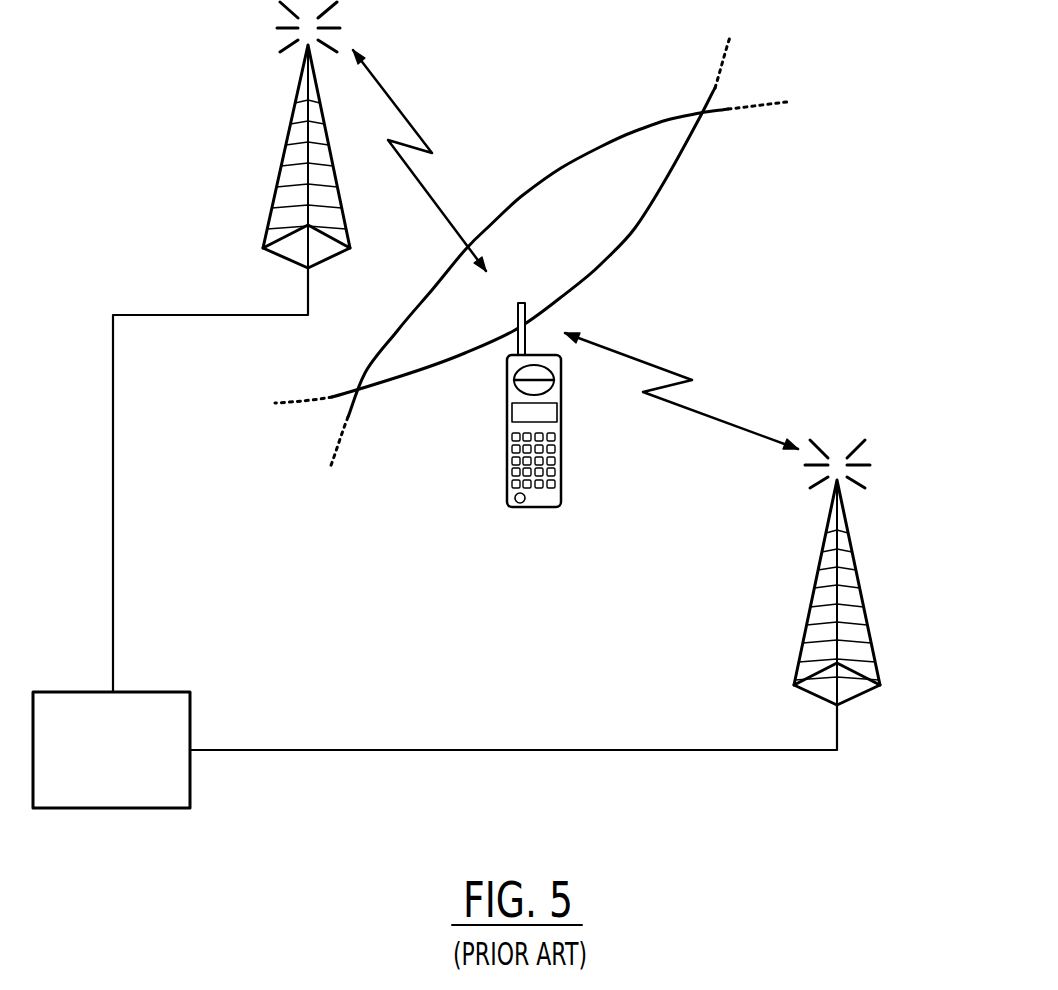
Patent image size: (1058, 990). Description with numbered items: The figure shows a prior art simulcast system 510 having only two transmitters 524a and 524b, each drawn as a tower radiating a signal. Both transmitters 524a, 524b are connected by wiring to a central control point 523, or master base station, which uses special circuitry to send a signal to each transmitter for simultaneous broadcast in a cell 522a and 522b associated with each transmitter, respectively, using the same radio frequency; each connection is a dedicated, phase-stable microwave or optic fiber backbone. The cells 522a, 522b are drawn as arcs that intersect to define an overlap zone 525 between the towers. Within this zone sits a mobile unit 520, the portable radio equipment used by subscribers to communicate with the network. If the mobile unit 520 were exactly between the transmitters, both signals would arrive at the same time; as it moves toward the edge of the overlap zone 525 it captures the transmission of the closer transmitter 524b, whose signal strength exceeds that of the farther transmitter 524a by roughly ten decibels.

The simulcast system 510 is at (682, 812).
The mobile unit 520 is at (530, 507).
The cell 522a is at (493, 89).
The cell 522b is at (800, 322).
The control point 523 is at (190, 778).
The transmitter 524a is at (285, 152).
The transmitter 524b is at (861, 593).
The overlap zone 525 is at (628, 217).